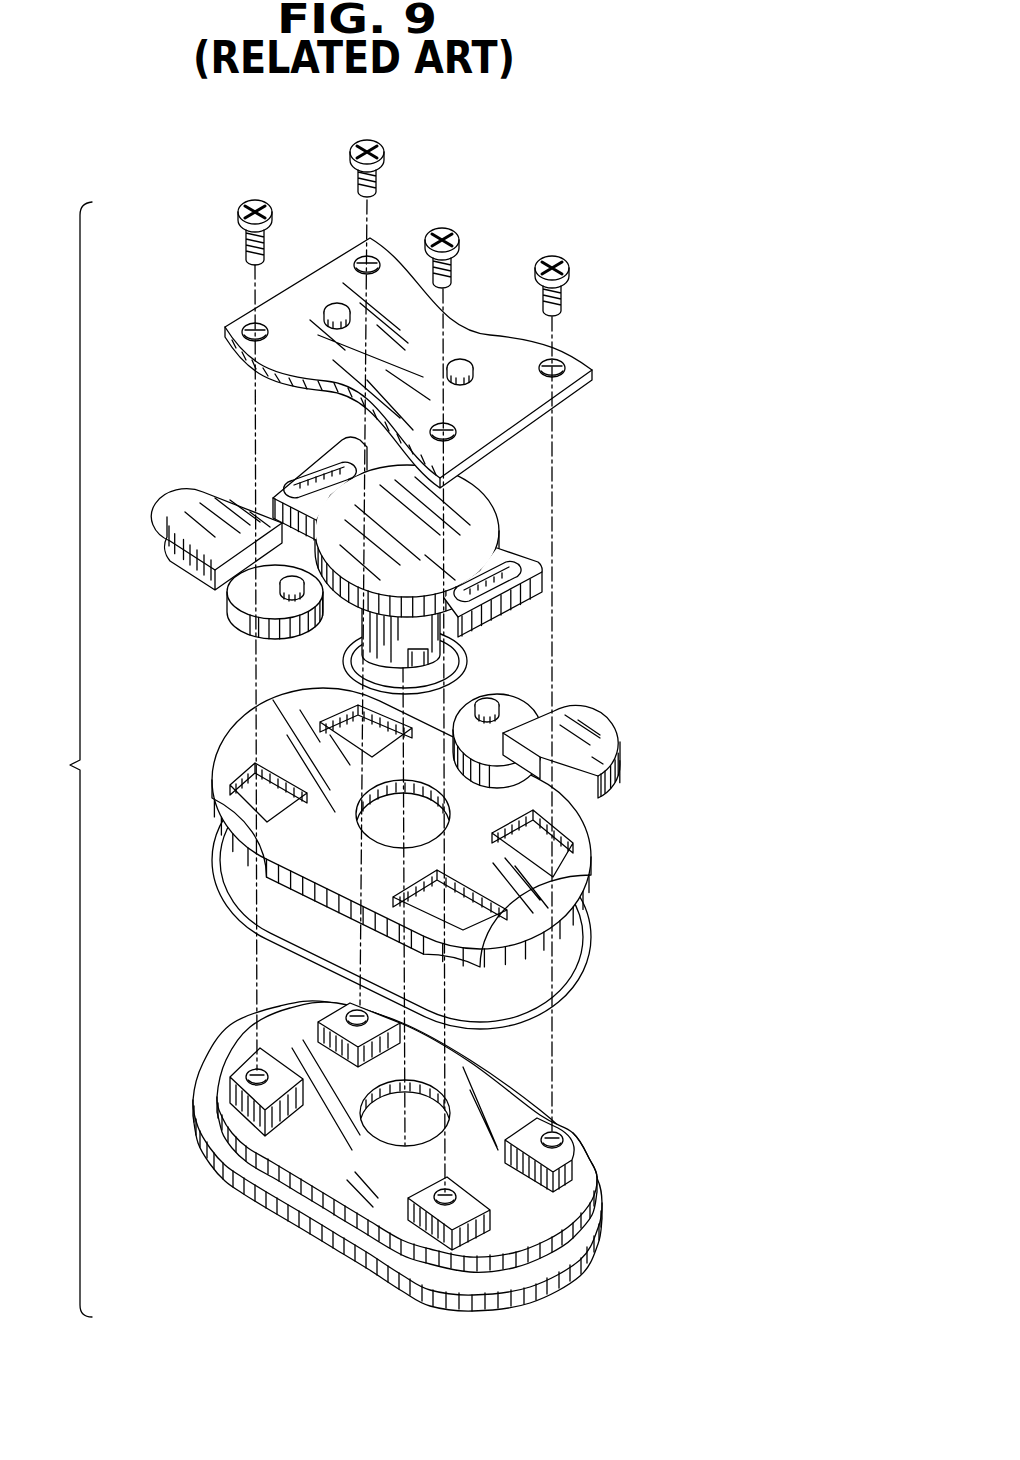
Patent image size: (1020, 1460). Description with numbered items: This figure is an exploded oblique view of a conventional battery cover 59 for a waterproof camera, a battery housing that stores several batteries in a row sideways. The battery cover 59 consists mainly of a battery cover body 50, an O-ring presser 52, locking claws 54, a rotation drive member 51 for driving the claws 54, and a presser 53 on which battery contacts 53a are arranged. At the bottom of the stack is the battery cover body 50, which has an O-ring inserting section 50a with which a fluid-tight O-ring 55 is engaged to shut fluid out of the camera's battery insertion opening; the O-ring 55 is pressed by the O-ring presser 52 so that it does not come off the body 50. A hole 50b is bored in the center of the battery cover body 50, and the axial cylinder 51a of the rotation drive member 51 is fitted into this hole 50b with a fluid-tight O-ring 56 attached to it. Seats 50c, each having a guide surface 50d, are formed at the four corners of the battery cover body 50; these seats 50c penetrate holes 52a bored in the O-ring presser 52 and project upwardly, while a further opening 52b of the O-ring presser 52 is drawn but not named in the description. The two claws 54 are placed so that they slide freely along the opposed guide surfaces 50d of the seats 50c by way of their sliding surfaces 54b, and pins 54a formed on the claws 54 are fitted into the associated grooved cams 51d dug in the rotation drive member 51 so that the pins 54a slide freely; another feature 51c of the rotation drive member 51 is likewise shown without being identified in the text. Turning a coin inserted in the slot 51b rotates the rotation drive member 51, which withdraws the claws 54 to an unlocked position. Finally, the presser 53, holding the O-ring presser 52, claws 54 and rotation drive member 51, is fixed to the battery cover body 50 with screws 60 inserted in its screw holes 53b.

The screws 60 is at (386, 152).
The presser 53 is at (489, 323).
The battery contacts 53a is at (335, 303).
The screw holes 53b is at (563, 362).
The rotation drive member 51 is at (496, 492).
The axial cylinder 51a is at (370, 640).
The slot 51b is at (430, 660).
The slot of rotary member 51c is at (520, 565).
The grooved cams 51d is at (545, 566).
The locking claws 54 is at (618, 740).
The pins 54a is at (500, 703).
The sliding surfaces 54b is at (548, 776).
The fluid-tight O-ring 56 is at (462, 657).
The O-ring presser 52 is at (588, 905).
The holes 52a is at (576, 845).
The center hole of intermediate plate 52b is at (372, 832).
The fluid-tight O-ring 55 is at (592, 946).
The battery cover body 50 is at (597, 1256).
The O-ring inserting section 50a is at (352, 1210).
The hole 50b is at (375, 1122).
The seats 50c is at (566, 1132).
The guide surface 50d is at (590, 1190).
The battery cover 59 is at (60, 759).